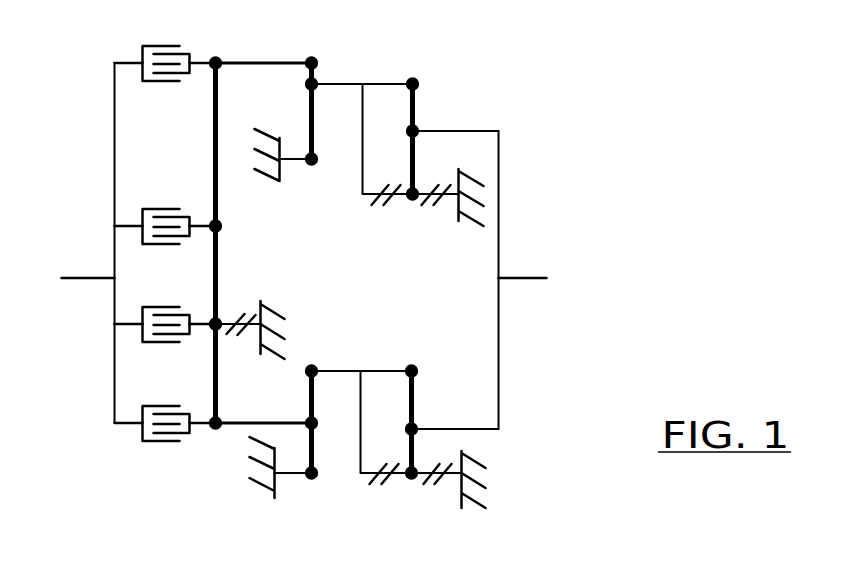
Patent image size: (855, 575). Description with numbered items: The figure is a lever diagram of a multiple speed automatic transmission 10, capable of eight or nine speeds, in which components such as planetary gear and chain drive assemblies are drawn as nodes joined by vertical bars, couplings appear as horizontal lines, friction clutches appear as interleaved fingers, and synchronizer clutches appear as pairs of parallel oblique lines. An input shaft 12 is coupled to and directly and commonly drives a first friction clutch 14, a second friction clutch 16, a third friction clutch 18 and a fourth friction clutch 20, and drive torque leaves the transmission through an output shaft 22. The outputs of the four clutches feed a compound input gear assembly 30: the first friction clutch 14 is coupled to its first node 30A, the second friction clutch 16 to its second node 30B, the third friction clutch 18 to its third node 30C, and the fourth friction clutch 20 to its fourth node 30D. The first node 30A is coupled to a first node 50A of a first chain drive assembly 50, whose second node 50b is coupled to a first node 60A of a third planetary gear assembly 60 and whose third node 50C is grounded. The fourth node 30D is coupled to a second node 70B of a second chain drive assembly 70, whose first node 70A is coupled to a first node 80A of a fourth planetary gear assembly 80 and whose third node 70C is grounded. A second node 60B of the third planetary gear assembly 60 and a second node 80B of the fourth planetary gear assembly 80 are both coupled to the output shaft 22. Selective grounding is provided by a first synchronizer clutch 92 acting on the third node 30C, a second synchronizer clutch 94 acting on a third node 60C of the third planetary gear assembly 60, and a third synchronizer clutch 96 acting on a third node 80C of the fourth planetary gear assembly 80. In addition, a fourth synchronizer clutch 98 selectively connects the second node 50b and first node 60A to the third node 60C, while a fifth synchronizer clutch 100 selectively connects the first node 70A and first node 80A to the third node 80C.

The multiple speed automatic transmission 10 is at (552, 189).
The input shaft 12 is at (82, 279).
The first friction clutch 14 is at (165, 74).
The second friction clutch 16 is at (165, 216).
The third friction clutch 18 is at (165, 337).
The fourth friction clutch 20 is at (165, 438).
The output shaft 22 is at (523, 279).
The compound input gear assembly 30 is at (220, 42).
The first node of compound input gear assembly 30A is at (211, 70).
The second node of compound input gear assembly 30B is at (211, 233).
The third node of compound input gear assembly 30C is at (216, 331).
The fourth node of compound input gear assembly 30D is at (211, 430).
The first chain drive assembly 50 is at (317, 38).
The first node of first chain drive assembly 50A is at (305, 84).
The second node of first chain drive assembly 50b is at (314, 78).
The third node of first chain drive assembly 50C is at (309, 165).
The third planetary gear assembly 60 is at (423, 48).
The first node of third planetary gear assembly 60A is at (415, 82).
The second node of third planetary gear assembly 60B is at (415, 128).
The third node of third planetary gear assembly 60C is at (408, 200).
The second chain drive assembly 70 is at (323, 332).
The first node of second chain drive assembly 70A is at (313, 366).
The second node of second chain drive assembly 70B is at (312, 428).
The third node of second chain drive assembly 70C is at (307, 478).
The fourth planetary gear assembly 80 is at (423, 335).
The first node of fourth planetary gear assembly 80A is at (413, 366).
The second node of fourth planetary gear assembly 80B is at (413, 425).
The third node of fourth planetary gear assembly 80C is at (411, 479).
The first synchronizer clutch 92 is at (243, 316).
The second synchronizer clutch 94 is at (432, 204).
The third synchronizer clutch 96 is at (435, 466).
The fourth synchronizer clutch 98 is at (390, 183).
The fifth synchronizer clutch 100 is at (382, 488).